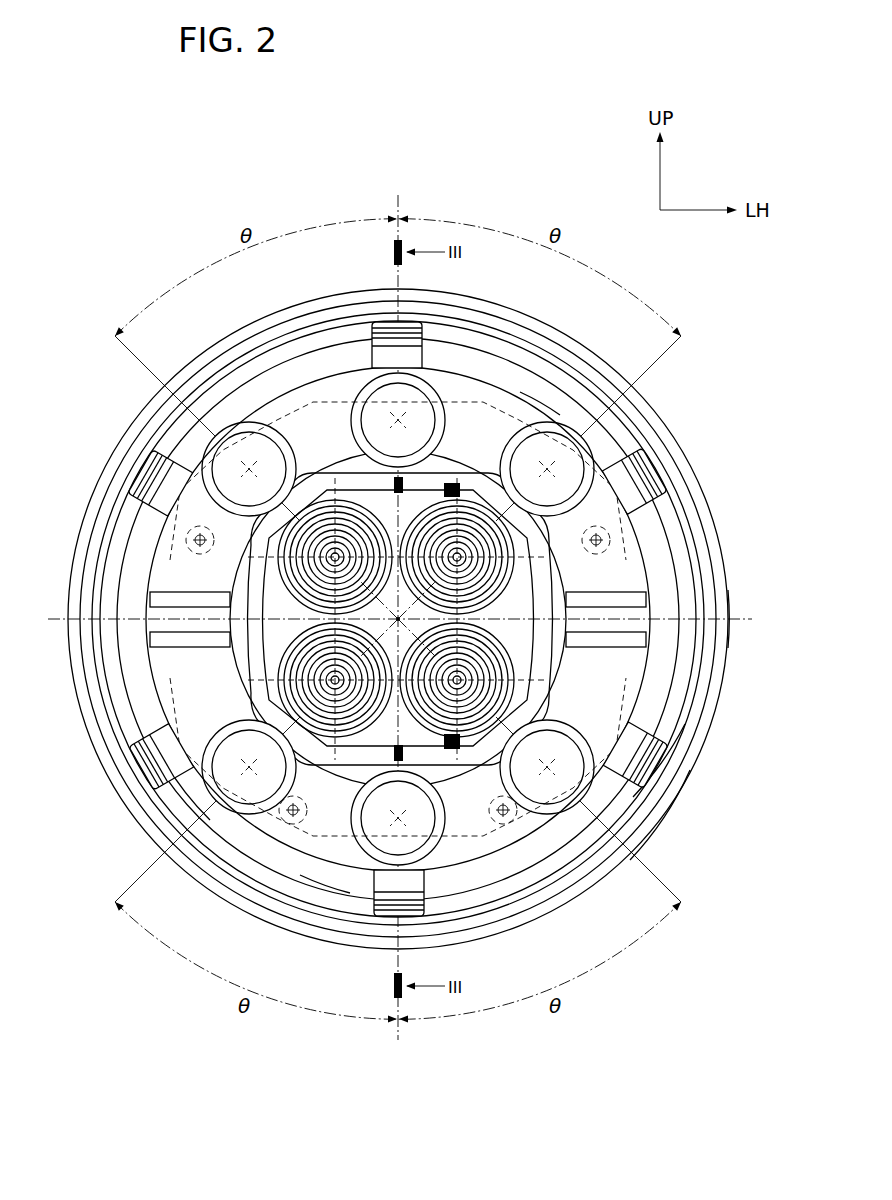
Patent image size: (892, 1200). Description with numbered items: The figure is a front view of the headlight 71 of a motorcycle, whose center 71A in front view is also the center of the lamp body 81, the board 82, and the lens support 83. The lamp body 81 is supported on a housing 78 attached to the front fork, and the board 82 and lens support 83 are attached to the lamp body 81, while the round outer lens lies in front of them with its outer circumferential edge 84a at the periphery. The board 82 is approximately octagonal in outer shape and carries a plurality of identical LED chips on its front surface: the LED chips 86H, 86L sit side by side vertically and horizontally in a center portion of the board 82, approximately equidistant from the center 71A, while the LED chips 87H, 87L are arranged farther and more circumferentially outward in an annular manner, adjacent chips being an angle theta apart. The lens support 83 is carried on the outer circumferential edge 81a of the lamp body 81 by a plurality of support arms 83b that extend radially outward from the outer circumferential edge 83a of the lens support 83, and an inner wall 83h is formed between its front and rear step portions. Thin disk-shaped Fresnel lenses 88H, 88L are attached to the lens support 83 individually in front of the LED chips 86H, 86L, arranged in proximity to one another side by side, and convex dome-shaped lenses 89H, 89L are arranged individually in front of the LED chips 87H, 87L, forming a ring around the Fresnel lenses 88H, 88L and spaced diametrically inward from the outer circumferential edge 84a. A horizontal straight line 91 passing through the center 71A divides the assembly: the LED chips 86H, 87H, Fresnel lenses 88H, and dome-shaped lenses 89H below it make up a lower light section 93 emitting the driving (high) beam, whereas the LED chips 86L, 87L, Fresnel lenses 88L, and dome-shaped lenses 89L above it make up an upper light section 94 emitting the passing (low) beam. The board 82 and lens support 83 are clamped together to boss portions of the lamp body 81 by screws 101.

The headlight 71 is at (205, 213).
The center 71A is at (700, 650).
The housing 78 is at (100, 472).
The lamp body 81 is at (106, 572).
The outer circumferential edge 81a is at (100, 604).
The board 82 is at (655, 548).
The lens support 83 is at (130, 712).
The outer circumferential edge 83a is at (140, 728).
The support arm 83b is at (410, 330).
The inner wall 83h is at (690, 735).
The outer circumferential edge 84a is at (652, 812).
The LED chip 86L is at (320, 470).
The LED chip 86H is at (300, 780).
The LED chip 87L is at (368, 390).
The LED chip 87H is at (380, 860).
The Fresnel lens 88L is at (183, 548).
The Fresnel lens 88H is at (195, 667).
The dome-shaped lens 89L is at (395, 416).
The dome-shaped lens 89H is at (235, 780).
The straight line 91 is at (731, 617).
The lower light section 93 is at (330, 882).
The upper light section 94 is at (505, 420).
The screw 101 is at (188, 535).